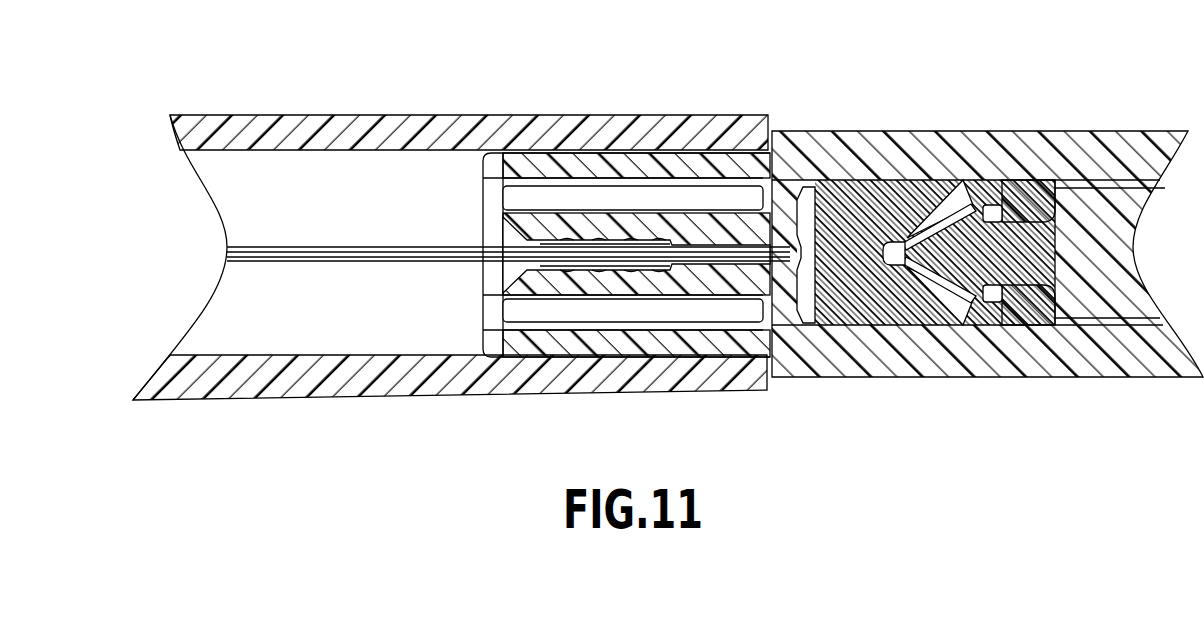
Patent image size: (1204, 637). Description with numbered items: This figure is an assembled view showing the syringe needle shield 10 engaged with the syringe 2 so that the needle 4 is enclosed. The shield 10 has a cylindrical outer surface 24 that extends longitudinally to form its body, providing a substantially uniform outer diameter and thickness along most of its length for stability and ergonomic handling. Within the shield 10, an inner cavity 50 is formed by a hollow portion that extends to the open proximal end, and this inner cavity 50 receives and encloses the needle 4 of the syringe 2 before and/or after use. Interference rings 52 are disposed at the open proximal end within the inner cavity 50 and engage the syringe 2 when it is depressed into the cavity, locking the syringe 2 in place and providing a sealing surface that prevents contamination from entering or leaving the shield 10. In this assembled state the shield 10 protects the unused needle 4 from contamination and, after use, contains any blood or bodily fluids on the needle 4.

The syringe needle shield 10 is at (392, 90).
The syringe 2 is at (1005, 80).
The cylindrical outer surface 24 is at (552, 115).
The interference rings 52 is at (692, 152).
The inner cavity 50 is at (258, 318).
The needle 4 is at (433, 262).